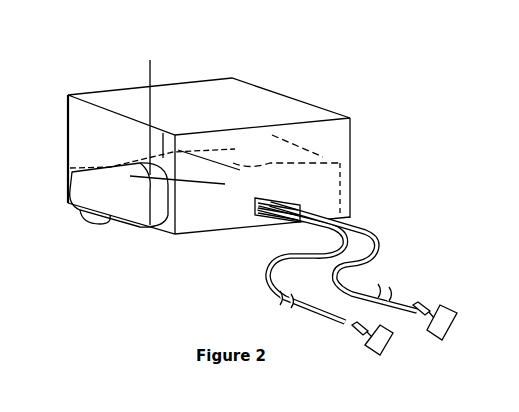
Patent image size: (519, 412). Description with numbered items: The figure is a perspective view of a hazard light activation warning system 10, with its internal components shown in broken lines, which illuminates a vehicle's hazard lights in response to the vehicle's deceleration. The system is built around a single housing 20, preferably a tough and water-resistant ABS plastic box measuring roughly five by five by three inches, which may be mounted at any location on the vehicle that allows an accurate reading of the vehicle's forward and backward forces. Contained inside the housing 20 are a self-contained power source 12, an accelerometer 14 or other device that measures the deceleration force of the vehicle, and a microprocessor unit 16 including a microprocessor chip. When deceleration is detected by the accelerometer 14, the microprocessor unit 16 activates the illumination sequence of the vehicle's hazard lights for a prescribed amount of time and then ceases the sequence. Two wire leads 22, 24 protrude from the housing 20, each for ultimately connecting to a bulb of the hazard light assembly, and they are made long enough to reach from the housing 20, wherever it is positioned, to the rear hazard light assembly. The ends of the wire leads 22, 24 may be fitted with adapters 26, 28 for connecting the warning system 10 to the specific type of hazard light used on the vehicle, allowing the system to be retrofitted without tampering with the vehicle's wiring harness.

The hazard light activation warning system 10 is at (72, 73).
The self-contained power source 12 is at (140, 205).
The accelerometer 14 is at (151, 107).
The microprocessor unit 16 is at (318, 204).
The housing 20 is at (260, 120).
The wire lead 22 is at (265, 270).
The wire lead 24 is at (377, 252).
The adapter 26 is at (381, 339).
The adapter 28 is at (445, 322).